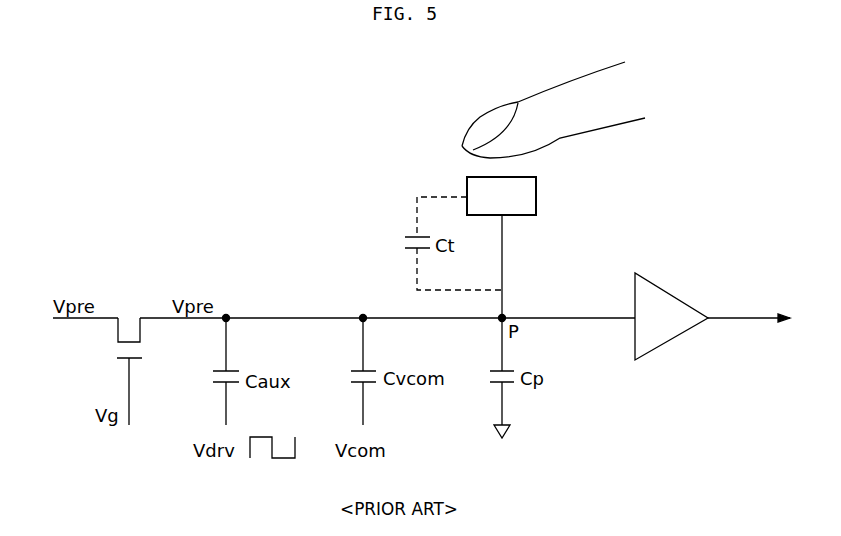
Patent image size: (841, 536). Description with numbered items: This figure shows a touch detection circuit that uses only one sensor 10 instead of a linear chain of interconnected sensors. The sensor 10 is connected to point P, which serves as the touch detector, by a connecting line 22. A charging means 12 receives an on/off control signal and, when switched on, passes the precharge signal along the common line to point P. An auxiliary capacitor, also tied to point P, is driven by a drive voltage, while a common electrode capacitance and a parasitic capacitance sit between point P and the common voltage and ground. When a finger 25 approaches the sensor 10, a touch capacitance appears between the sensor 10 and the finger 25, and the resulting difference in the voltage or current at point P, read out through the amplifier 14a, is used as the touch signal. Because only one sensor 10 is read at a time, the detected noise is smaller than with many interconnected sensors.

The sensor 10 is at (536, 197).
The charging means 12 is at (128, 318).
The amplifier 14a is at (688, 284).
The sensing line 22 is at (502, 248).
The finger 25 is at (542, 96).